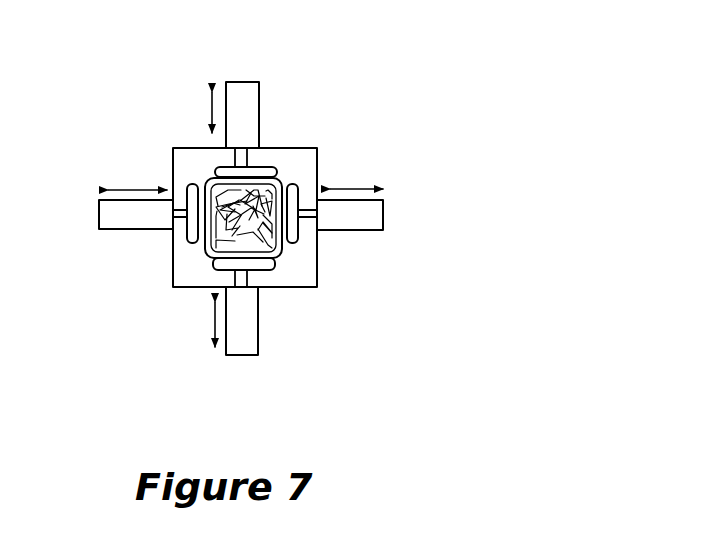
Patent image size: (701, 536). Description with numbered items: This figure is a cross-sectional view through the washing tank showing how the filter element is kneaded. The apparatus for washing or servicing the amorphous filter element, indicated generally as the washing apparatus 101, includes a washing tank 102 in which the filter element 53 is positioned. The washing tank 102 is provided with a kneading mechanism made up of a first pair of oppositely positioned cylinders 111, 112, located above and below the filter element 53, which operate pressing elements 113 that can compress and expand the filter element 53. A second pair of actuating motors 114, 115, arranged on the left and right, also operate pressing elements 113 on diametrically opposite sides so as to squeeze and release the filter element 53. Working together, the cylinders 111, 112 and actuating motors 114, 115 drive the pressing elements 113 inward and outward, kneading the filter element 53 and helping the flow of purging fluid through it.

The washing apparatus 101 is at (459, 69).
The washing tank 102 is at (317, 157).
The cylinder 111 is at (259, 100).
The cylinder 112 is at (258, 333).
The pressing elements 113 is at (218, 168).
The actuating motor 114 is at (120, 229).
The actuating motor 115 is at (383, 215).
The filter element 53 is at (280, 257).